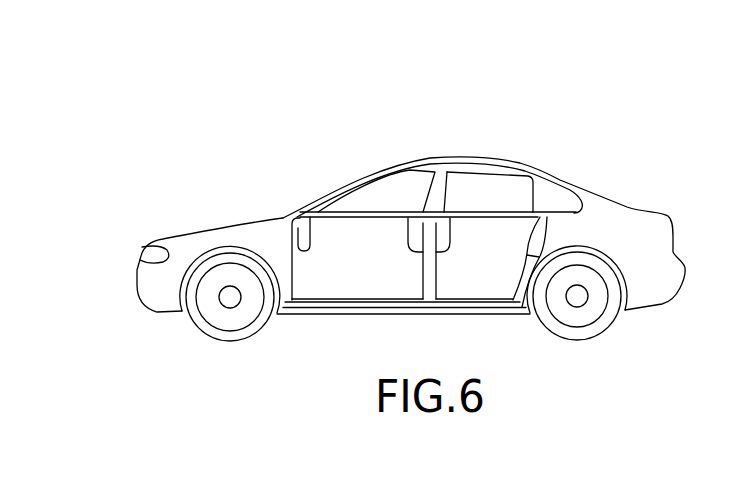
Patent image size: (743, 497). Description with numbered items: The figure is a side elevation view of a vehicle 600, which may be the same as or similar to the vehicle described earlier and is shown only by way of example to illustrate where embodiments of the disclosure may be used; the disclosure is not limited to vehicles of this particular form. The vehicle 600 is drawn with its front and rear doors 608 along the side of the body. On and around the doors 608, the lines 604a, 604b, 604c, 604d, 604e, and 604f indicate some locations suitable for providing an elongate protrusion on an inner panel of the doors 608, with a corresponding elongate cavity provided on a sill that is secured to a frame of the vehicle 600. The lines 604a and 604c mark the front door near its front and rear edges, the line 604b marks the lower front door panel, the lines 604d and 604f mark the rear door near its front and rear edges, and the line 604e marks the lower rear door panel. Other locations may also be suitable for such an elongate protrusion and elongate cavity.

The vehicle 600 is at (256, 171).
The line 604a is at (309, 241).
The line 604b is at (362, 293).
The line 604c is at (408, 222).
The line 604d is at (448, 247).
The line 604e is at (489, 292).
The line 604f is at (543, 233).
The doors 608 is at (308, 282).